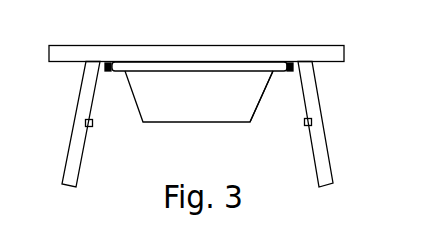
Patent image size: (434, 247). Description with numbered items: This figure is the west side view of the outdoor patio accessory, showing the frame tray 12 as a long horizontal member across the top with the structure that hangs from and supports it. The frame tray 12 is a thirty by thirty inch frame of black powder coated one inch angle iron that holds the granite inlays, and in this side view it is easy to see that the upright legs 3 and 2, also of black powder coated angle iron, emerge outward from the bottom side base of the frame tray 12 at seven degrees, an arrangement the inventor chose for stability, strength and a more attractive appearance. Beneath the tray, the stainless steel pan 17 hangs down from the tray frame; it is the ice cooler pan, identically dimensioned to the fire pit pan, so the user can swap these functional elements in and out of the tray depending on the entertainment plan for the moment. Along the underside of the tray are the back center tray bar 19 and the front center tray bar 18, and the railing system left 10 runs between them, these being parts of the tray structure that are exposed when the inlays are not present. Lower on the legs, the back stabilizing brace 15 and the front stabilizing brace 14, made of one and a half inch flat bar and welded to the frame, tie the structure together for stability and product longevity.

The frame tray 12 is at (344, 52).
The upright leg 3 is at (78, 98).
The upright leg 2 is at (318, 100).
The railing system left 10 is at (200, 72).
The ice cooler stainless steel pan 17 is at (257, 117).
The back center tray bar 19 is at (105, 66).
The front center tray bar 18 is at (296, 68).
The back stabilizing brace 15 is at (91, 127).
The front stabilizing brace 14 is at (305, 126).